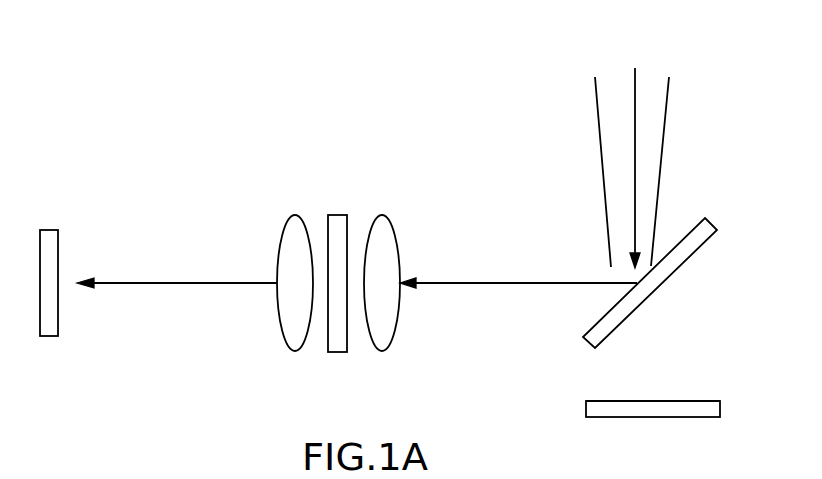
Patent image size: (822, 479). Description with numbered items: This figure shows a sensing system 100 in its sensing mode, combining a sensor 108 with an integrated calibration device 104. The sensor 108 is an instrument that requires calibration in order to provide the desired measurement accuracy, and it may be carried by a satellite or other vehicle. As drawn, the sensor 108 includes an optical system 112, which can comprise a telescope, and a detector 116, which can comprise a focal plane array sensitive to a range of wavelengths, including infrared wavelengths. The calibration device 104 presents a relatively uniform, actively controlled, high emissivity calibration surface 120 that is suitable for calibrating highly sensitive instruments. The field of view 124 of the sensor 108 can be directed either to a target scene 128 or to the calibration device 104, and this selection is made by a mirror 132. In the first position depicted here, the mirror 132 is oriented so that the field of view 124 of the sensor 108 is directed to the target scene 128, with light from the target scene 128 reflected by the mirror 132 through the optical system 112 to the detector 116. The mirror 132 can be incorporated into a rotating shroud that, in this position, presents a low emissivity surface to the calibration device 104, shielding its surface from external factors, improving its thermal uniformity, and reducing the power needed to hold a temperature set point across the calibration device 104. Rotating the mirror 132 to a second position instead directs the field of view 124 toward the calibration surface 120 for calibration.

The sensing system 100 is at (230, 58).
The calibration device 104 is at (683, 379).
The sensor 108 is at (276, 246).
The optical system 112 is at (338, 215).
The detector 116 is at (50, 229).
The calibration surface 120 is at (692, 400).
The field of view 124 is at (665, 127).
The target scene 128 is at (690, 30).
The mirror 132 is at (703, 243).